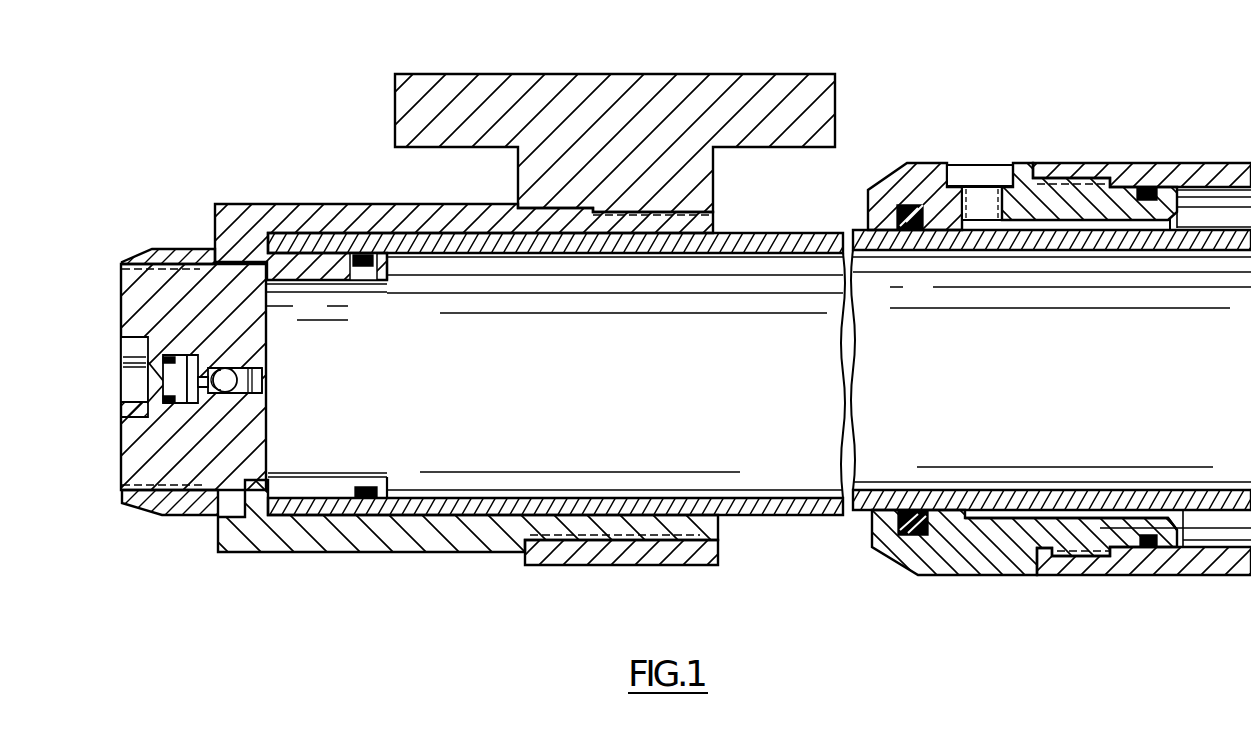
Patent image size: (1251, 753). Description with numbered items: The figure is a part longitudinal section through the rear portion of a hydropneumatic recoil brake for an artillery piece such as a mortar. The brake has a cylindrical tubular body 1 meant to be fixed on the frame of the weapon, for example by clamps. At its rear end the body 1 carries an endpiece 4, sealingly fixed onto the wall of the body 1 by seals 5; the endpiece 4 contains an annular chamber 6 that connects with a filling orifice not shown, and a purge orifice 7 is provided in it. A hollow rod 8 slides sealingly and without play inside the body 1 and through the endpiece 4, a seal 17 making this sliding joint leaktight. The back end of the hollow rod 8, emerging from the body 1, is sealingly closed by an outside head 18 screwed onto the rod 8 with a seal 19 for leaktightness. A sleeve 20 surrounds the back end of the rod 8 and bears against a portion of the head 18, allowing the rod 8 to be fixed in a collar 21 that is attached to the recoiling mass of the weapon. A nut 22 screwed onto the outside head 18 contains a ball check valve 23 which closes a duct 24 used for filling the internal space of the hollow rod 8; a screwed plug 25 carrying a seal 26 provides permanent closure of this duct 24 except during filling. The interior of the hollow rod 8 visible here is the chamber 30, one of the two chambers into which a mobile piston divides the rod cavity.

The cylindrical tubular body 1 is at (1087, 563).
The endpiece 4 is at (978, 557).
The seals 5 is at (1153, 545).
The annular chamber 6 is at (1078, 515).
The purge orifice 7 is at (985, 205).
The hollow rod 8 is at (986, 492).
The seal 17 is at (915, 232).
The outside head 18 is at (232, 306).
The seal 19 is at (375, 275).
The sleeve 20 is at (333, 217).
The collar 21 is at (645, 95).
The nut 22 is at (176, 250).
The ball check valve 23 is at (240, 382).
The duct 24 is at (210, 388).
The screwed plug 25 is at (143, 381).
The seal 26 is at (175, 408).
The chamber 30 is at (674, 374).